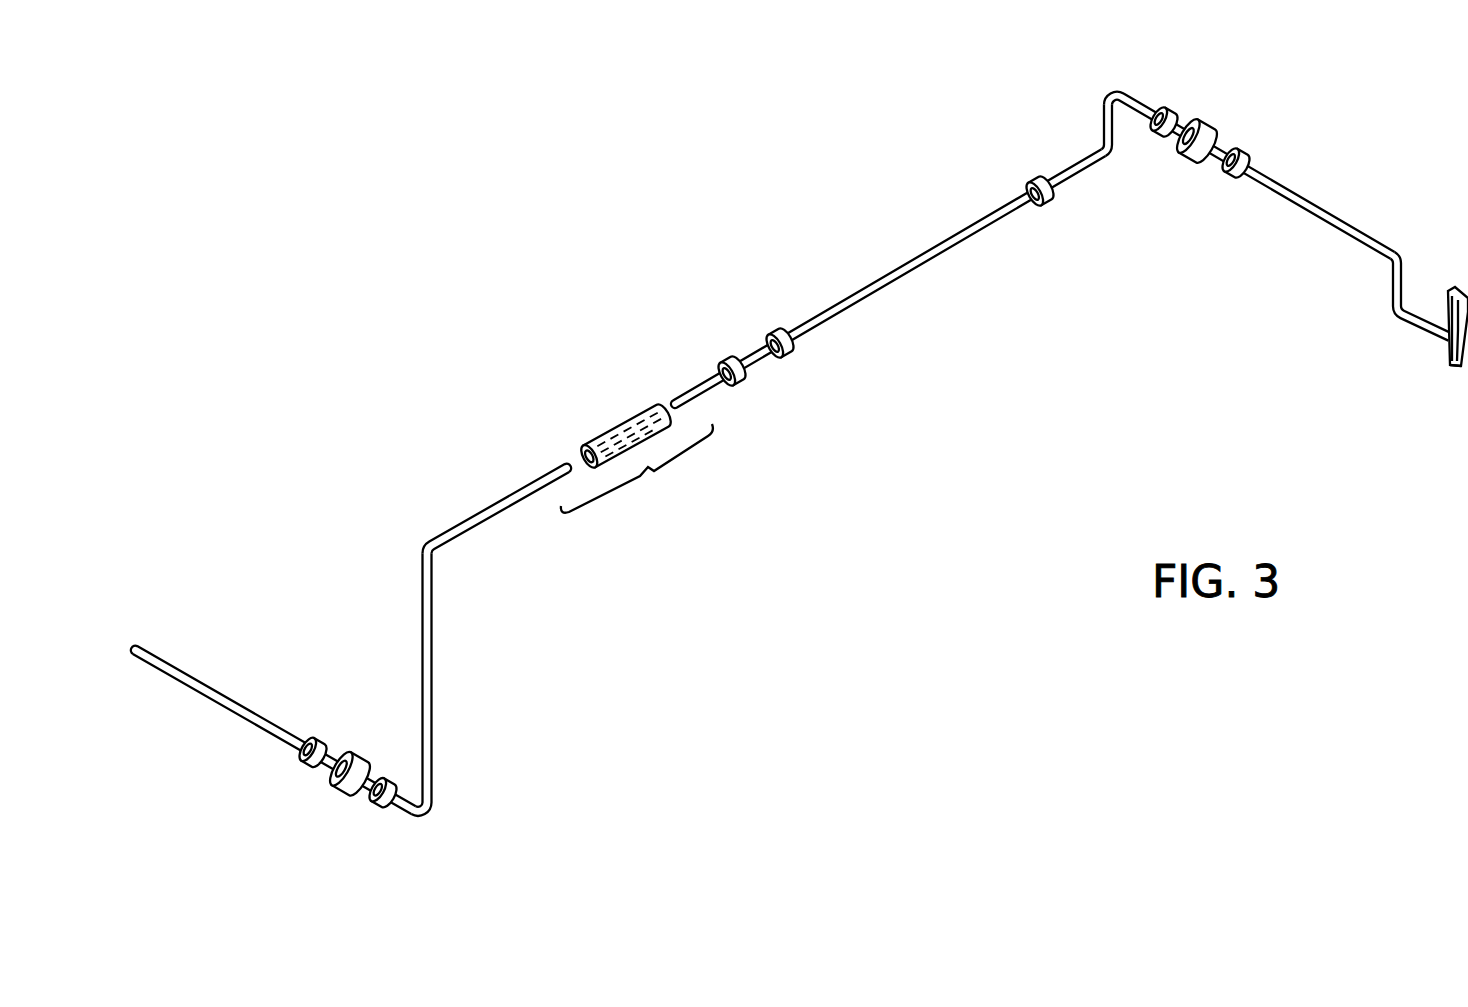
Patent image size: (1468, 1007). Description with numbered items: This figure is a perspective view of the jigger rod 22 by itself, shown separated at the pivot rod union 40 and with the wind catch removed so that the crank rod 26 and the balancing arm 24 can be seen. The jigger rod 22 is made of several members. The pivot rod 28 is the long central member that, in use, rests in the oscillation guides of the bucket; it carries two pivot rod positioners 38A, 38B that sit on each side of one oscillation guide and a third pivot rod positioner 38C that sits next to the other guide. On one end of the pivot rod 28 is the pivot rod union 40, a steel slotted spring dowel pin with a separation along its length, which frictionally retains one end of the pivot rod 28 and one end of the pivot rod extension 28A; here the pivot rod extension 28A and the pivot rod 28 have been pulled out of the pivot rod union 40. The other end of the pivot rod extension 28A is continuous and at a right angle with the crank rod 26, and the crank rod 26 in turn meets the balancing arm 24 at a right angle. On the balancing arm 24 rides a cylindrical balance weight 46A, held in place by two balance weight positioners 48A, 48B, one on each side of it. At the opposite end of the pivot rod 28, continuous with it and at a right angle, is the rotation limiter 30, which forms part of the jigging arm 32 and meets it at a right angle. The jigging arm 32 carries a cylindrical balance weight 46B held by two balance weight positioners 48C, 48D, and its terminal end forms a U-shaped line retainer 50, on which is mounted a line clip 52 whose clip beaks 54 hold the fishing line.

The jigger rod 22 is at (1061, 245).
The balancing arm 24 is at (228, 702).
The crank rod 26 is at (431, 669).
The pivot rod 28 is at (840, 310).
The pivot rod extension 28A is at (503, 503).
The rotation limiter 30 is at (1106, 116).
The jigging arm 32 is at (1295, 203).
The pivot rod positioner 38A is at (729, 357).
The pivot rod positioner 38B is at (778, 329).
The pivot rod positioner 38C is at (1032, 182).
The pivot rod union 40 is at (615, 424).
The balance weight 46A is at (336, 778).
The balance weight 46B is at (1195, 128).
The balance weight positioner 48A is at (320, 740).
The balance weight positioner 48B is at (373, 804).
The balance weight positioner 48C is at (1163, 108).
The balance weight positioner 48D is at (1245, 155).
The line retainer 50 is at (1415, 320).
The line clip 52 is at (1464, 294).
The clip beaks 54 is at (1447, 364).